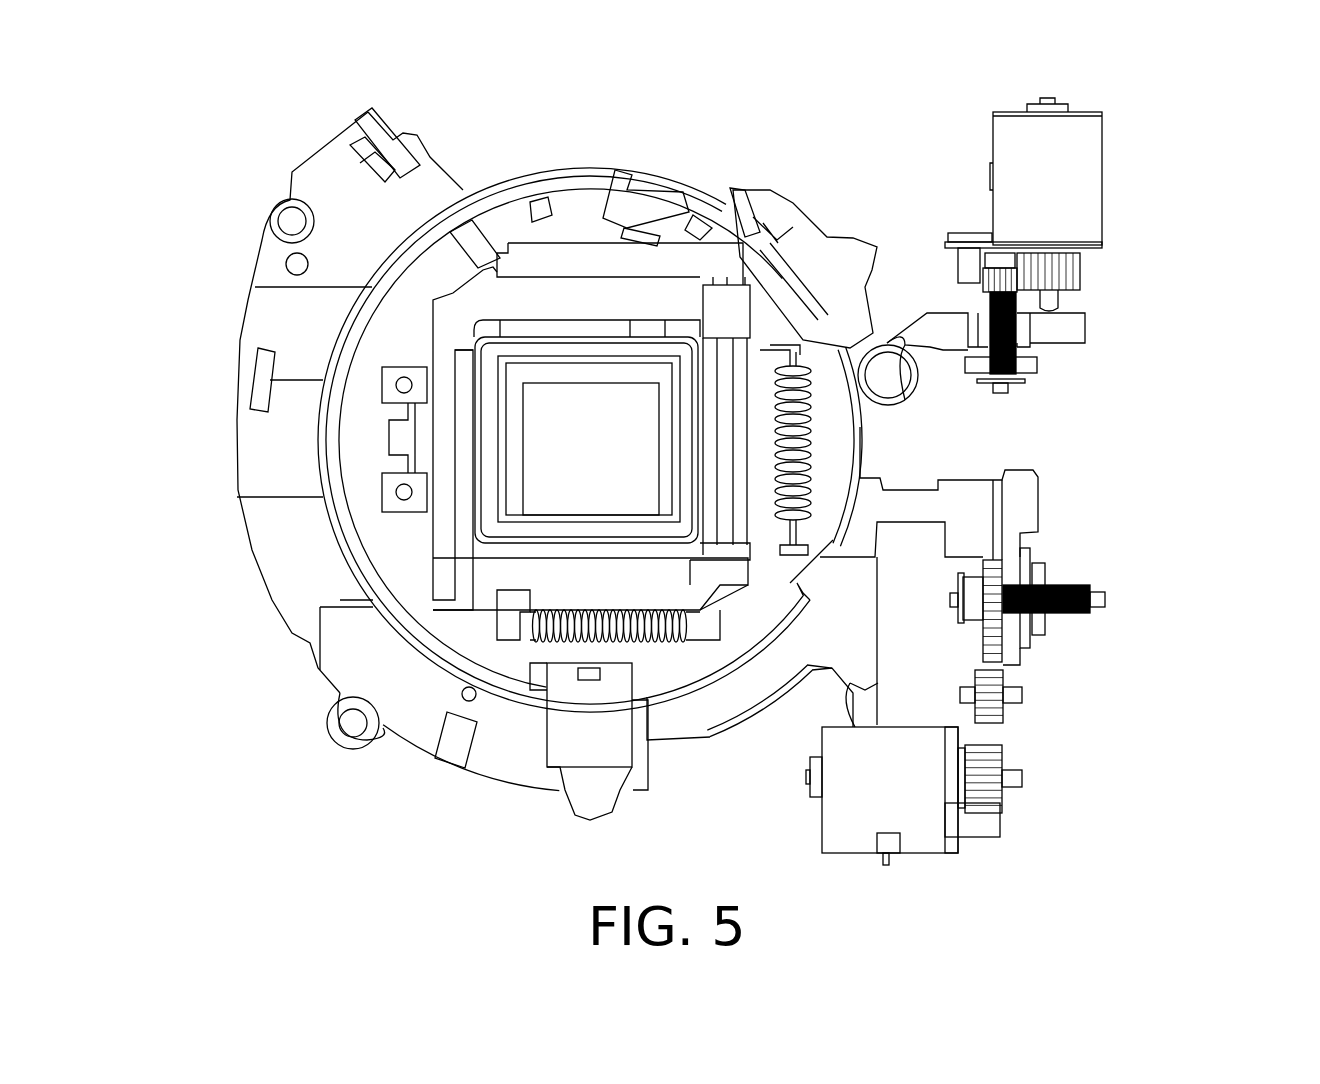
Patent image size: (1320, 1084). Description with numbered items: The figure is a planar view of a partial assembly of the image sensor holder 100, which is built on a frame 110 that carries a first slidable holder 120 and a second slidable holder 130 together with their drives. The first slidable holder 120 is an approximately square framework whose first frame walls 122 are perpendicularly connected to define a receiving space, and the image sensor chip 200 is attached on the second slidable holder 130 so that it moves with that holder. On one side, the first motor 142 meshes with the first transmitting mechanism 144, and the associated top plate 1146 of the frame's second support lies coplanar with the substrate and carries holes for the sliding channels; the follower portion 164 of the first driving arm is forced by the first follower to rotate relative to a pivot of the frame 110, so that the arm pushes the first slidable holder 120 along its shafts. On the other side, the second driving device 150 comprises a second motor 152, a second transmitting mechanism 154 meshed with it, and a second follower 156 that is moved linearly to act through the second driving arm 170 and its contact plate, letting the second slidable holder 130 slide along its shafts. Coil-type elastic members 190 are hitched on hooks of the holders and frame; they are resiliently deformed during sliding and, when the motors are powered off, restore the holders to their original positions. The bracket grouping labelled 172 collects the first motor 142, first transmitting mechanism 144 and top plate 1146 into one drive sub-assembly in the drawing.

The image sensor holder 100 is at (468, 78).
The frame 110 is at (285, 325).
The first slidable holder 120 is at (408, 432).
The first frame walls 122 is at (548, 634).
The second slidable holder 130 is at (565, 348).
The first motor 142 is at (1082, 178).
The first transmitting mechanism 144 is at (1062, 274).
The top plate 1146 is at (1025, 372).
The second driving device 150 is at (1170, 640).
The second motor 152 is at (927, 813).
The second transmitting mechanism 154 is at (1010, 693).
The second follower 156 is at (1043, 622).
The follower portion 164 is at (930, 330).
The second driving arm 170 is at (960, 505).
The first driving assembly 172 is at (1205, 150).
The elastic members 190 is at (705, 492).
The image sensor chip 200 is at (545, 467).